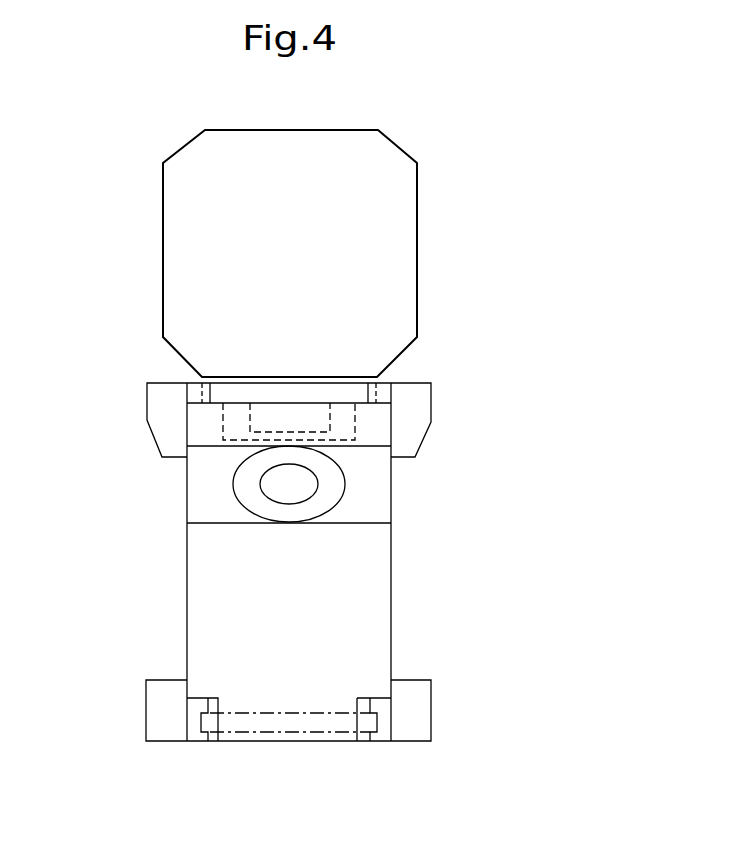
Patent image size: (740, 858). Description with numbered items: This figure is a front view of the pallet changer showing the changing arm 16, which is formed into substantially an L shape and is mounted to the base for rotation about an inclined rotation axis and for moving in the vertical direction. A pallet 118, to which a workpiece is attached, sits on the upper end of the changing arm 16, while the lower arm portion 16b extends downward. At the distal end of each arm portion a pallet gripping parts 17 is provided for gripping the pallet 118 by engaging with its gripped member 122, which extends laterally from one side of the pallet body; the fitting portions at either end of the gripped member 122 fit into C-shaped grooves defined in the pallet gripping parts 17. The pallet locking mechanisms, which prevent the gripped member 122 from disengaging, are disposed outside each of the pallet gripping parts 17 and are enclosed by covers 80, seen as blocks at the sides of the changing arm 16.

The pallet 118 is at (442, 126).
The changing arm 16 is at (370, 492).
The arm portion 16b is at (370, 600).
The pallet gripping parts 17 is at (195, 733).
The gripped member 122 is at (268, 725).
The cover 80 is at (162, 402).